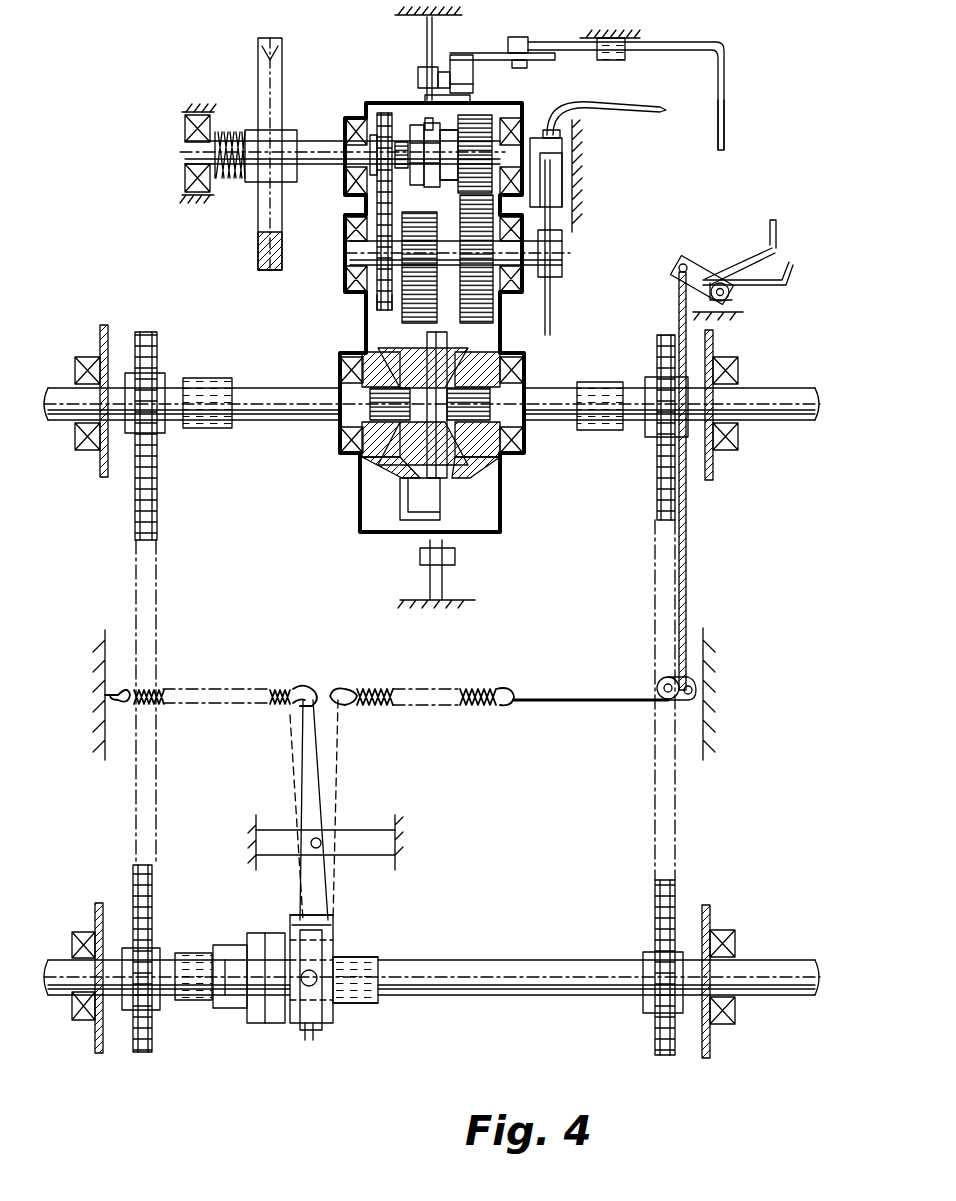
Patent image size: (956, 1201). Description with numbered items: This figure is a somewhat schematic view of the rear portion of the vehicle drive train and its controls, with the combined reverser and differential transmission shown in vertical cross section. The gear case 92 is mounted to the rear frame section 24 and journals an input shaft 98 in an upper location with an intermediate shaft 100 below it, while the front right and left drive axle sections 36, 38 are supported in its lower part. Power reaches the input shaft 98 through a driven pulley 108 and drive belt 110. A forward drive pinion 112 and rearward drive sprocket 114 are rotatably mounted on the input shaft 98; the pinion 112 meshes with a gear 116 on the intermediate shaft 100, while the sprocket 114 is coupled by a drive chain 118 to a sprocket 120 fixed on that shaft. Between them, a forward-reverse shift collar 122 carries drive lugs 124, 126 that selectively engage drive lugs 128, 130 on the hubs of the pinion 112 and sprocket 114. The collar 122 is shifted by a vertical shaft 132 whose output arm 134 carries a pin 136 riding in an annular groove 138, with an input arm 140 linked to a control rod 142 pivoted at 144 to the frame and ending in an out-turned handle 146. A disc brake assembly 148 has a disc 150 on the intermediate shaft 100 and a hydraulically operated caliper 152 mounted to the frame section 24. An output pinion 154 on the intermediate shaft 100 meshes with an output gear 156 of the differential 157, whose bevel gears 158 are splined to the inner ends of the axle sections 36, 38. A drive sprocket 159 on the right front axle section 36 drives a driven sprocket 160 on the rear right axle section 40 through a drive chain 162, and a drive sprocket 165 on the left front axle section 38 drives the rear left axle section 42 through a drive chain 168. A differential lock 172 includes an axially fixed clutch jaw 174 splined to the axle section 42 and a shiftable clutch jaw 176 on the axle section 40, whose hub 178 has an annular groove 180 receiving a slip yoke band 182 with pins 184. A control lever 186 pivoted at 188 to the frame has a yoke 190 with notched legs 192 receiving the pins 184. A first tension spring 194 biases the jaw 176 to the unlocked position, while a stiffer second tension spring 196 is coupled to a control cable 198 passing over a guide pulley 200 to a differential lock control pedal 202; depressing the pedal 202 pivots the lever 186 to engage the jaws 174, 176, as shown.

The rear frame section 24 is at (105, 648).
The front right drive axle section 36 is at (582, 386).
The front left drive axle section 38 is at (296, 386).
The rear right drive axle section 40 is at (545, 960).
The rear left drive axle section 42 is at (185, 955).
The gear case 92 is at (372, 100).
The input shaft 98 is at (322, 140).
The intermediate shaft 100 is at (550, 272).
The driven pulley 108 is at (258, 62).
The drive belt 110 is at (272, 38).
The forward drive pinion 112 is at (490, 114).
The rearward drive sprocket 114 is at (340, 160).
The gear 116 is at (490, 312).
The drive chain 118 is at (356, 200).
The sprocket 120 is at (360, 258).
The forward-reverse shift collar 122 is at (564, 252).
The drive lugs 124 is at (455, 114).
The drive lugs 126 is at (408, 122).
The drive lugs 128 is at (560, 136).
The drive lugs 130 is at (378, 114).
The vertical shaft 132 is at (465, 54).
The output arm 134 is at (452, 72).
The pin 136 is at (428, 60).
The annular groove 138 is at (425, 210).
The input arm 140 is at (518, 37).
The control rod 142 is at (690, 43).
The pivot mount 144 is at (620, 60).
The out-turned handle 146 is at (726, 102).
The disc brake assembly 148 is at (598, 182).
The disc 150 is at (551, 302).
The hydraulically operated caliper 152 is at (562, 158).
The output pinion 154 is at (378, 298).
The output gear 156 is at (440, 498).
The differential 157 is at (478, 462).
The bevel gears 158 is at (362, 450).
The drive sprocket 159 is at (648, 437).
The driven sprocket 160 is at (645, 955).
The drive chain 162 is at (655, 905).
The drive sprocket 165 is at (160, 436).
The drive chain 168 is at (150, 890).
The differential lock 172 is at (480, 772).
The clutch jaw 174 is at (238, 944).
The clutch jaw 176 is at (352, 1004).
The hub 178 is at (296, 1024).
The annular groove 180 is at (305, 1030).
The slip yoke band 182 is at (322, 962).
The pins 184 is at (316, 1040).
The control lever 186 is at (340, 745).
The pivot 188 is at (322, 840).
The yoke 190 is at (333, 920).
The notched legs 192 is at (362, 958).
The first tension spring 194 is at (286, 688).
The second tension spring 196 is at (380, 688).
The control cable 198 is at (610, 698).
The guide pulley 200 is at (690, 702).
The differential lock control pedal 202 is at (764, 290).